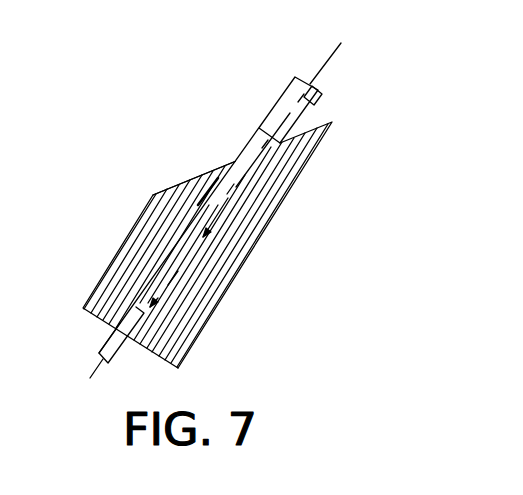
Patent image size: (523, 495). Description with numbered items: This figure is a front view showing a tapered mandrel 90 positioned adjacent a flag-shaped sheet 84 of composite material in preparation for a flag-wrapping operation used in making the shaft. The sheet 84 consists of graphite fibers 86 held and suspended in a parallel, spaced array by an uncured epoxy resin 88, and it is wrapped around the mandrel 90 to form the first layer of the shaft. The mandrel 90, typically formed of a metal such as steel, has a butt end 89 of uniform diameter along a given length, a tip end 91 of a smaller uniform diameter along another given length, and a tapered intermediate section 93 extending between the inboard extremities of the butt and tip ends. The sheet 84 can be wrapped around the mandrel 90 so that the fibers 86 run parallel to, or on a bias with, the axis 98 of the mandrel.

The sheet 84 is at (314, 162).
The graphite fibers 86 is at (148, 230).
The uncured epoxy resin 88 is at (183, 184).
The butt end 89 is at (310, 108).
The mandrel 90 is at (297, 68).
The tip end 91 is at (98, 345).
The tapered intermediate section 93 is at (213, 222).
The axis 98 is at (352, 50).